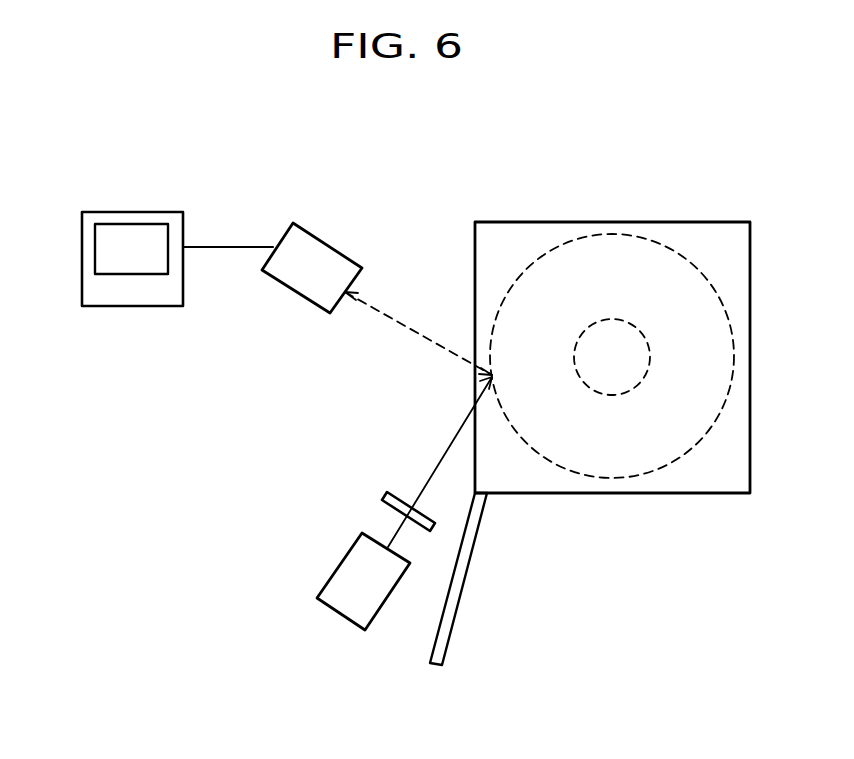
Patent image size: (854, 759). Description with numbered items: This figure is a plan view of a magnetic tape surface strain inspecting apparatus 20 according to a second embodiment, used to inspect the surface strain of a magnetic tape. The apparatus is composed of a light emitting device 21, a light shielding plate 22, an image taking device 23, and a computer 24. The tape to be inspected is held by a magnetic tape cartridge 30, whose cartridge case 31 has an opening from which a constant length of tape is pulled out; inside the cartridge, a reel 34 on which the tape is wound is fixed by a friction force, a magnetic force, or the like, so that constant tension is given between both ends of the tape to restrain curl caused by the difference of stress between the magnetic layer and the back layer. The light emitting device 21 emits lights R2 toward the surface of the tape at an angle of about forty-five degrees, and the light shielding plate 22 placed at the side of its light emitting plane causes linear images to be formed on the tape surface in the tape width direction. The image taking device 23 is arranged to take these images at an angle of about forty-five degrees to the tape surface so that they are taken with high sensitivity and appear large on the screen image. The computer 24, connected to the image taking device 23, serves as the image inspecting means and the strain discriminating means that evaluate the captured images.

The magnetic tape surface strain inspecting apparatus 20 is at (438, 133).
The light emitting device 21 is at (333, 562).
The light shielding plate 22 is at (382, 495).
The image taking device 23 is at (330, 237).
The computer 24 is at (132, 212).
The magnetic tape cartridge 30 is at (590, 392).
The cartridge case 31 is at (513, 220).
The reel 34 is at (622, 365).
The lights R2 is at (447, 458).